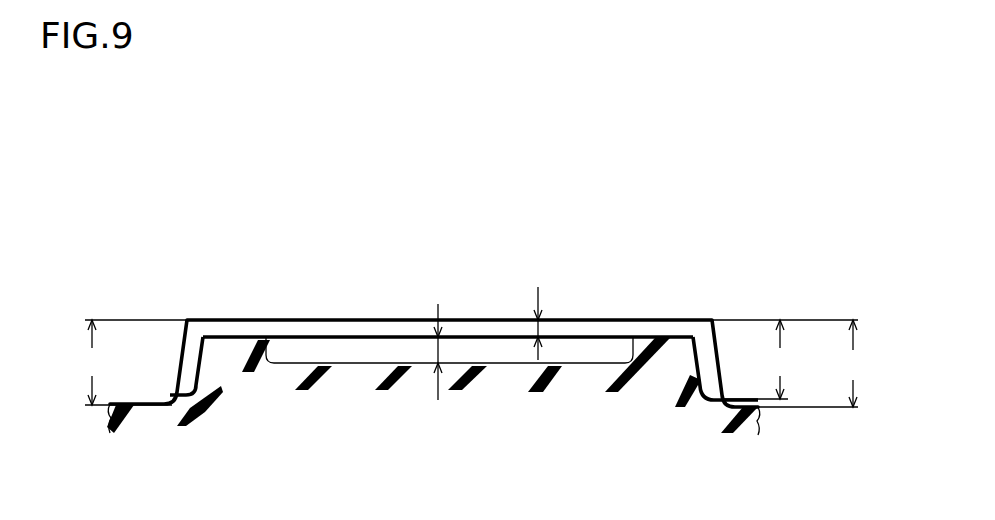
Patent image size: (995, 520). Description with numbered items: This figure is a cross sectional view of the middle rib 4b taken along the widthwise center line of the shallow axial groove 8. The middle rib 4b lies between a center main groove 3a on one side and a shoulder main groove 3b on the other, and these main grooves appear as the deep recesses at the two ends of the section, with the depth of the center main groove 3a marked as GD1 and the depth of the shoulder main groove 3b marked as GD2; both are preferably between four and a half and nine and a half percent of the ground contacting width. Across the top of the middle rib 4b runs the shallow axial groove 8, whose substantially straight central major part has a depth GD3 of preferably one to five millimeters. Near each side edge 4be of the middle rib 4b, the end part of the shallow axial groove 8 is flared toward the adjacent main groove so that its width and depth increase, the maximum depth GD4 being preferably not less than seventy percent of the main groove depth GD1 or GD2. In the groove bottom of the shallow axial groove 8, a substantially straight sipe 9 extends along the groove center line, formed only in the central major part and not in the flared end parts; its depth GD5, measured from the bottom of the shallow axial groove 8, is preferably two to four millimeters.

The center main groove 3a is at (734, 351).
The shoulder main groove 3b is at (133, 348).
The middle rib 4b is at (305, 318).
The side edge of the middle rib 4be is at (188, 318).
The shallow axial groove 8 is at (240, 335).
The sipe 9 is at (363, 358).
The depth of the center main groove GD1 is at (853, 363).
The depth of the shoulder main groove GD2 is at (92, 362).
The depth of the central major part of the shallow axial groove GD3 is at (540, 329).
The maximum depth of the flared end part GD4 is at (779, 359).
The depth of the sipe GD5 is at (440, 347).